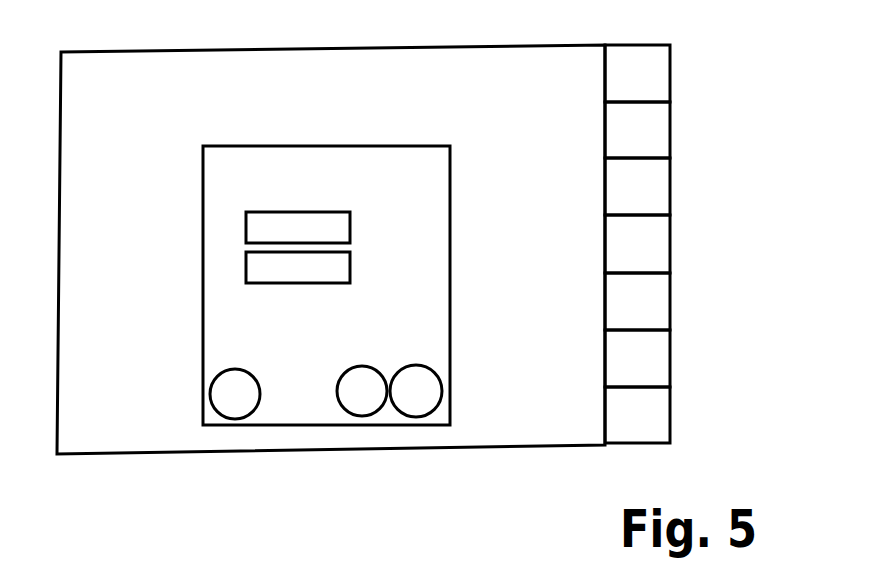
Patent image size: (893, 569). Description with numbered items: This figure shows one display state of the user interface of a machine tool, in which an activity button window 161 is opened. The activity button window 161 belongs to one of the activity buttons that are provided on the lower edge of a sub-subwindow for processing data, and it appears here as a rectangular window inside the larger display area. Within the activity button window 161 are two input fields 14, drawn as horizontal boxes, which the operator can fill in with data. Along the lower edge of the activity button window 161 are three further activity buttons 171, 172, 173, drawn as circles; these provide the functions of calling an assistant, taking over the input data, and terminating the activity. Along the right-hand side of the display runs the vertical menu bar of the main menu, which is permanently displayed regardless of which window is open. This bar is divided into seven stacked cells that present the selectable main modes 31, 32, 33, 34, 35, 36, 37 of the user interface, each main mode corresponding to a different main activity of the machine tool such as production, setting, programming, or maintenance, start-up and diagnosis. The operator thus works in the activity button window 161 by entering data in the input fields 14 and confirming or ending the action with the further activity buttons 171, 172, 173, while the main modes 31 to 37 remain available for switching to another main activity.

The activity button window 161 is at (230, 146).
The input fields 14 is at (342, 223).
The further activity button 171 is at (239, 400).
The further activity button 172 is at (359, 400).
The further activity button 173 is at (417, 398).
The main mode 31 is at (637, 73).
The main mode 32 is at (637, 130).
The main mode 33 is at (637, 186).
The main mode 34 is at (637, 244).
The main mode 35 is at (637, 301).
The main mode 36 is at (637, 358).
The main mode 37 is at (637, 415).